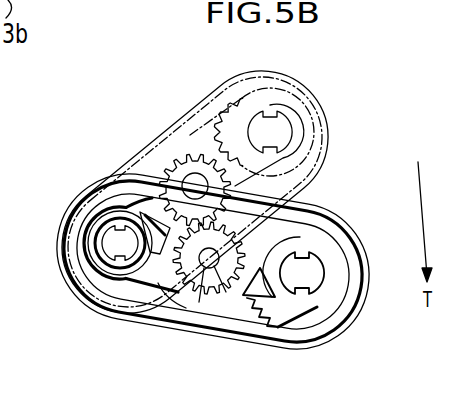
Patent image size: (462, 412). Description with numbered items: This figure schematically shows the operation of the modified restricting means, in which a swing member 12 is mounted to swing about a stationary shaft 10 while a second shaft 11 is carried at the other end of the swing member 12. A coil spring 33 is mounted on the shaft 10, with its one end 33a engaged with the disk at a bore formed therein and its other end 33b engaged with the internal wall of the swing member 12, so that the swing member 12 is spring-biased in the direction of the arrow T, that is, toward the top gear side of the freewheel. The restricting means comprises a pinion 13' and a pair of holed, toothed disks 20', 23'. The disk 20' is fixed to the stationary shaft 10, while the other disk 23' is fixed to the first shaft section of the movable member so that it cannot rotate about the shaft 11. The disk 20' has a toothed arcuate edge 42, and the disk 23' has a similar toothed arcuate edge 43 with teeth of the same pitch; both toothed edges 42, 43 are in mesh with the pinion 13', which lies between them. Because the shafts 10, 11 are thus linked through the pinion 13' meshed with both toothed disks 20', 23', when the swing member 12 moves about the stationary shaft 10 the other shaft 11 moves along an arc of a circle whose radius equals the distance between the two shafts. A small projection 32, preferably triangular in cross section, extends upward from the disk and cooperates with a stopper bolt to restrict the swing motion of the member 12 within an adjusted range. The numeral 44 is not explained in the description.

The swing member 12 is at (333, 213).
The holed, toothed disk 20' is at (191, 192).
The one end of coil spring 33a is at (147, 200).
The stationary shaft 10 is at (94, 241).
The coil spring 33 is at (98, 252).
The other end of coil spring 33b is at (120, 300).
The toothed arcuate edge 42 is at (168, 300).
The pinion 13' is at (209, 304).
The link 44 is at (224, 292).
The toothed arcuate edge 43 is at (255, 300).
The small projection 32 is at (293, 302).
The shaft 11 is at (312, 274).
The holed, toothed disk 23' is at (327, 285).